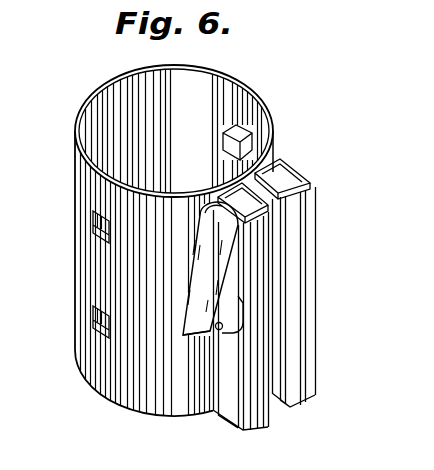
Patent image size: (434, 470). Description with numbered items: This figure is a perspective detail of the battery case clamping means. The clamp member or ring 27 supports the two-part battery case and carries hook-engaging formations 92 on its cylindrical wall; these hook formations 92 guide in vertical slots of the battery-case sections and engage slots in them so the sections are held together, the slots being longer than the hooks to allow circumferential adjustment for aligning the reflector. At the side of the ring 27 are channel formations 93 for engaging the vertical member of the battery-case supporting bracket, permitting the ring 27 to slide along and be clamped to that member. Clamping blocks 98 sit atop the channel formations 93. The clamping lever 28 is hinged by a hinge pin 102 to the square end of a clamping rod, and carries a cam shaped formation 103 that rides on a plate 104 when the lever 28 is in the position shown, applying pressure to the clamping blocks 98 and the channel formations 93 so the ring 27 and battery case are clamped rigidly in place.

The clamp member or ring 27 is at (80, 277).
The clamping lever 28 is at (195, 297).
The hook-engaging formations 92 is at (225, 143).
The channel formations 93 is at (318, 372).
The clamping blocks 98 is at (220, 194).
The hinge pin 102 is at (213, 336).
The cam shaped formation 103 is at (230, 322).
The plate 104 is at (243, 306).